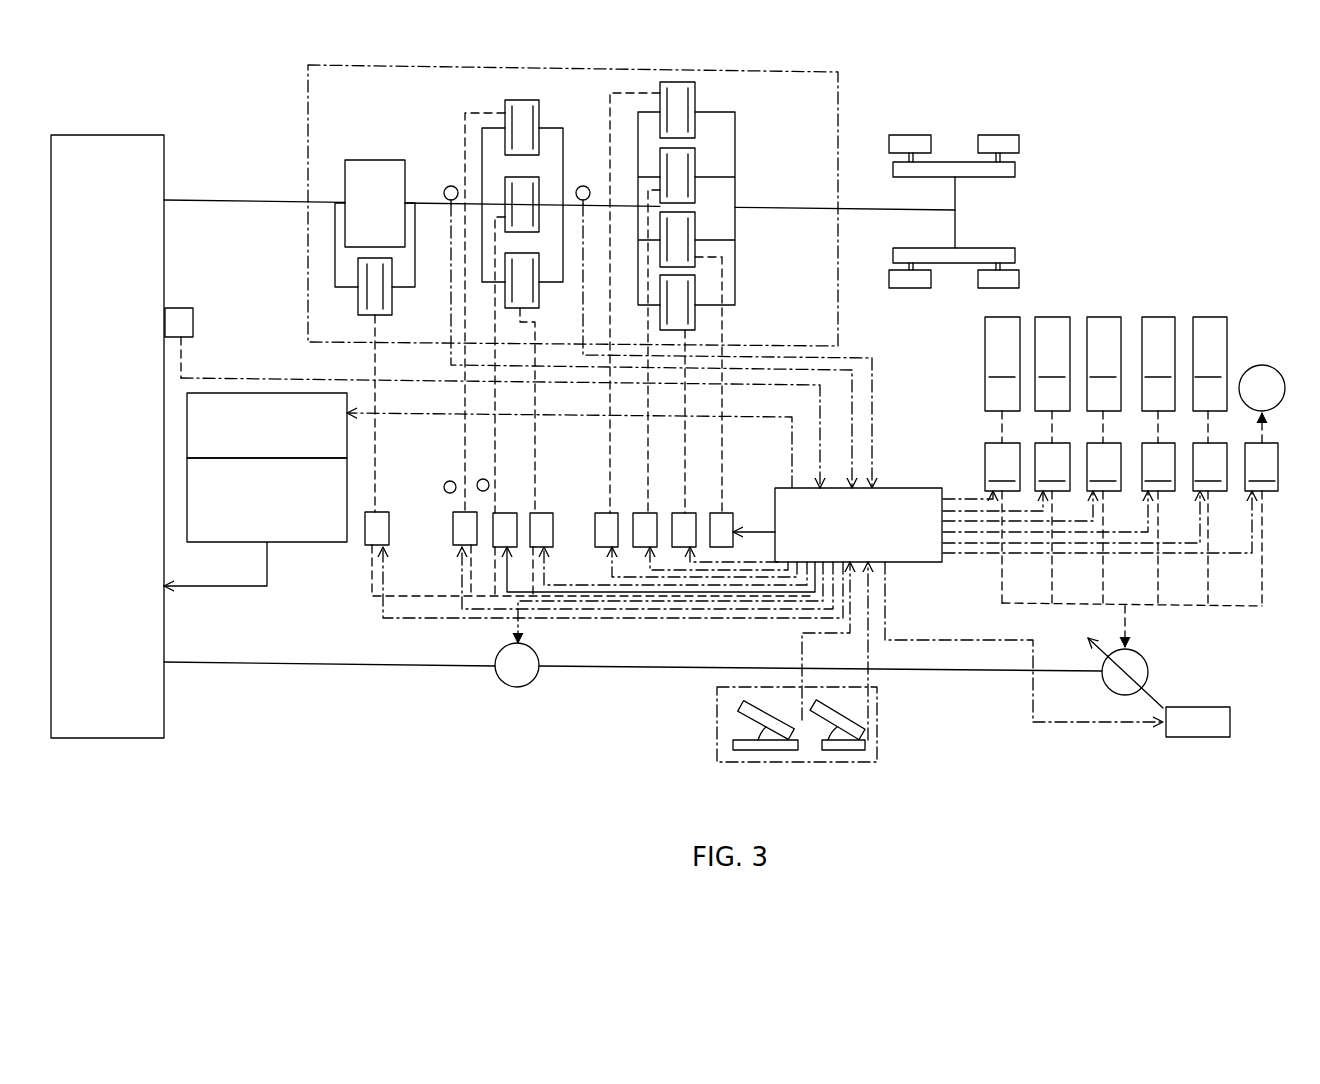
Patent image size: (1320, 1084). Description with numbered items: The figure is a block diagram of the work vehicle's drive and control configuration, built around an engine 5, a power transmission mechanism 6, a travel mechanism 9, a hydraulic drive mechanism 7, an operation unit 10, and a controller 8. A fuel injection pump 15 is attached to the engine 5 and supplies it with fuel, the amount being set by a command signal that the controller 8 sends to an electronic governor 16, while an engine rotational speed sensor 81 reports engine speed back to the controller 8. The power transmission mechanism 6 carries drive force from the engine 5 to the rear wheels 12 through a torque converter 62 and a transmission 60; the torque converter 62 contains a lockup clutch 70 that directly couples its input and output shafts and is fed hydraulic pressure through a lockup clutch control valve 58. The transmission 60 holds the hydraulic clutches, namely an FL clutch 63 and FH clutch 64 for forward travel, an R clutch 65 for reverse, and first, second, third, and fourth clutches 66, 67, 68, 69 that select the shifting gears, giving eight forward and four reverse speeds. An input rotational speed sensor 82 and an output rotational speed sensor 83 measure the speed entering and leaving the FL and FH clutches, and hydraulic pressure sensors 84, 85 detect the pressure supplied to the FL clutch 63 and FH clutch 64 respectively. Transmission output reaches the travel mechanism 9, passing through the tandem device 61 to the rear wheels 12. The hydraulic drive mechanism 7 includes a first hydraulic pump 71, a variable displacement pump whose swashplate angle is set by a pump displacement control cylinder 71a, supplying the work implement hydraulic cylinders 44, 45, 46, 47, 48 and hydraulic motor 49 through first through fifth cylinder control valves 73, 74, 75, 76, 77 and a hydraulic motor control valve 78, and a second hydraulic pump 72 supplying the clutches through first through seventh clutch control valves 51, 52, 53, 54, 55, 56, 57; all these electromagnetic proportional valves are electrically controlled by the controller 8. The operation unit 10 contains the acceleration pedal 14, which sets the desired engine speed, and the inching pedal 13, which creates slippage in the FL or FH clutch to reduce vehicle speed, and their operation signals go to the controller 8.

The engine 5 is at (125, 135).
The power transmission mechanism 6 is at (738, 67).
The hydraulic drive mechanism 7 is at (1255, 652).
The controller 8 is at (908, 488).
The travel mechanism 9 is at (1070, 138).
The operation unit 10 is at (877, 745).
The rear wheels 12 is at (906, 135).
The inching pedal 13 is at (743, 718).
The acceleration pedal 14 is at (835, 705).
The fuel injection pump 15 is at (289, 542).
The electronic governor 16 is at (347, 432).
The hydraulic cylinder 44 is at (1002, 380).
The hydraulic cylinder 45 is at (1052, 380).
The hydraulic cylinder 46 is at (1103, 380).
The hydraulic cylinder 47 is at (1158, 380).
The hydraulic cylinder 48 is at (1209, 380).
The hydraulic motor 49 is at (1262, 367).
The first clutch control valve 51 is at (453, 535).
The second clutch control valve 52 is at (507, 513).
The third clutch control valve 53 is at (545, 513).
The fourth clutch control valve 54 is at (617, 513).
The fifth clutch control valve 55 is at (655, 513).
The sixth clutch control valve 56 is at (732, 513).
The seventh clutch control valve 57 is at (694, 513).
The lockup clutch control valve 58 is at (365, 542).
The transmission 60 is at (590, 88).
The tandem device 61 is at (1015, 170).
The torque converter 62 is at (370, 160).
The FL clutch 63 is at (525, 100).
The FH clutch 64 is at (525, 232).
The R clutch 65 is at (535, 322).
The first clutch 66 is at (695, 100).
The second clutch 67 is at (695, 165).
The third clutch 68 is at (695, 237).
The fourth clutch 69 is at (695, 320).
The lockup clutch 70 is at (375, 315).
The first hydraulic pump 71 is at (1148, 672).
The pump displacement control cylinder 71a is at (1230, 727).
The second hydraulic pump 72 is at (498, 680).
The first cylinder control valve 73 is at (981, 523).
The second cylinder control valve 74 is at (1006, 523).
The third cylinder control valve 75 is at (1032, 523).
The fourth cylinder control valve 76 is at (1059, 524).
The fifth cylinder control valve 77 is at (1085, 524).
The hydraulic motor control valve 78 is at (1111, 524).
The engine rotational speed sensor 81 is at (181, 308).
The input rotational speed sensor 82 is at (449, 186).
The output rotational speed sensor 83 is at (584, 186).
The hydraulic pressure sensor 84 is at (445, 492).
The hydraulic pressure sensor 85 is at (480, 479).